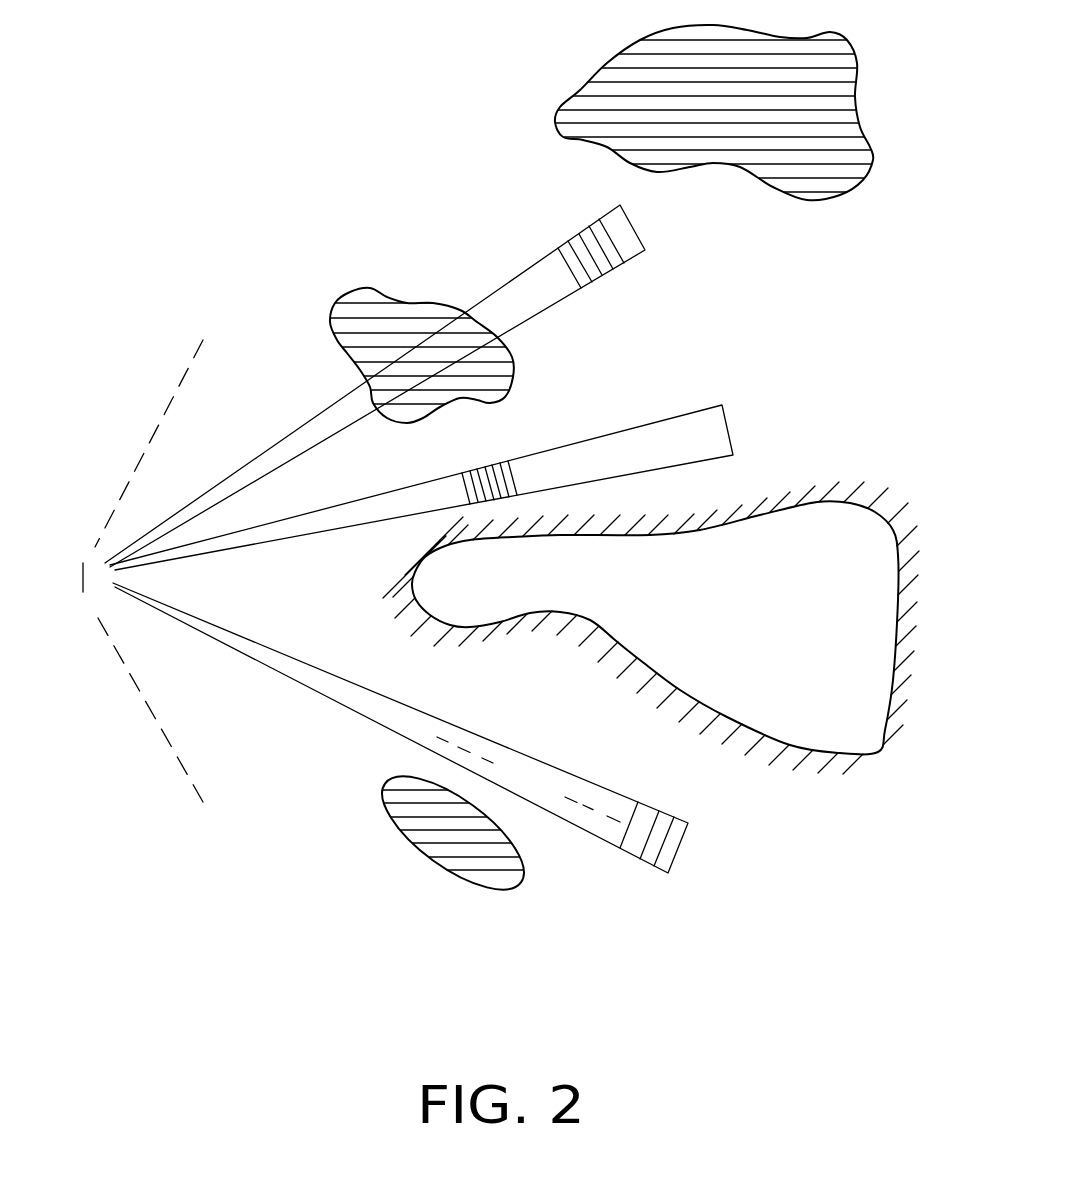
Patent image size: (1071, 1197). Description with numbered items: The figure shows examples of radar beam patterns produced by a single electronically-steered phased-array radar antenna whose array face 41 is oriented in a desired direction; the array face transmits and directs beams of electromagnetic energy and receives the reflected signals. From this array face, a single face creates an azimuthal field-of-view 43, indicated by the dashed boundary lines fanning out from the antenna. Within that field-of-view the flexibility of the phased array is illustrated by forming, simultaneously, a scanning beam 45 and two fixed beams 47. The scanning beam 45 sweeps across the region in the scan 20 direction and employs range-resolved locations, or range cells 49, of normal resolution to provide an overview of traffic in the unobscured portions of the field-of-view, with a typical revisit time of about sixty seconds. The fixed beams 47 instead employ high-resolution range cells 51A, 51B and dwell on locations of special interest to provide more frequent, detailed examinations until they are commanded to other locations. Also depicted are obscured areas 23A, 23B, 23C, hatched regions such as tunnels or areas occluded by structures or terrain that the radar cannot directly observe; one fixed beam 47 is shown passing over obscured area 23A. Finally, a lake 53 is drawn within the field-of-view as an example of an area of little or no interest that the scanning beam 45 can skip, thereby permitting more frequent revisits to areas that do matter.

The scan 20 is at (777, 813).
The obscured area 23A is at (398, 290).
The obscured area 23B is at (632, 52).
The obscured area 23C is at (448, 882).
The array face 41 is at (82, 592).
The azimuthal field-of-view 43 is at (135, 461).
The scanning beam 45 is at (287, 677).
The fixed beams 47 is at (637, 255).
The range cells 49 is at (655, 807).
The high-resolution range cell 51A is at (560, 246).
The high-resolution range cell 51B is at (490, 466).
The lake 53 is at (651, 628).